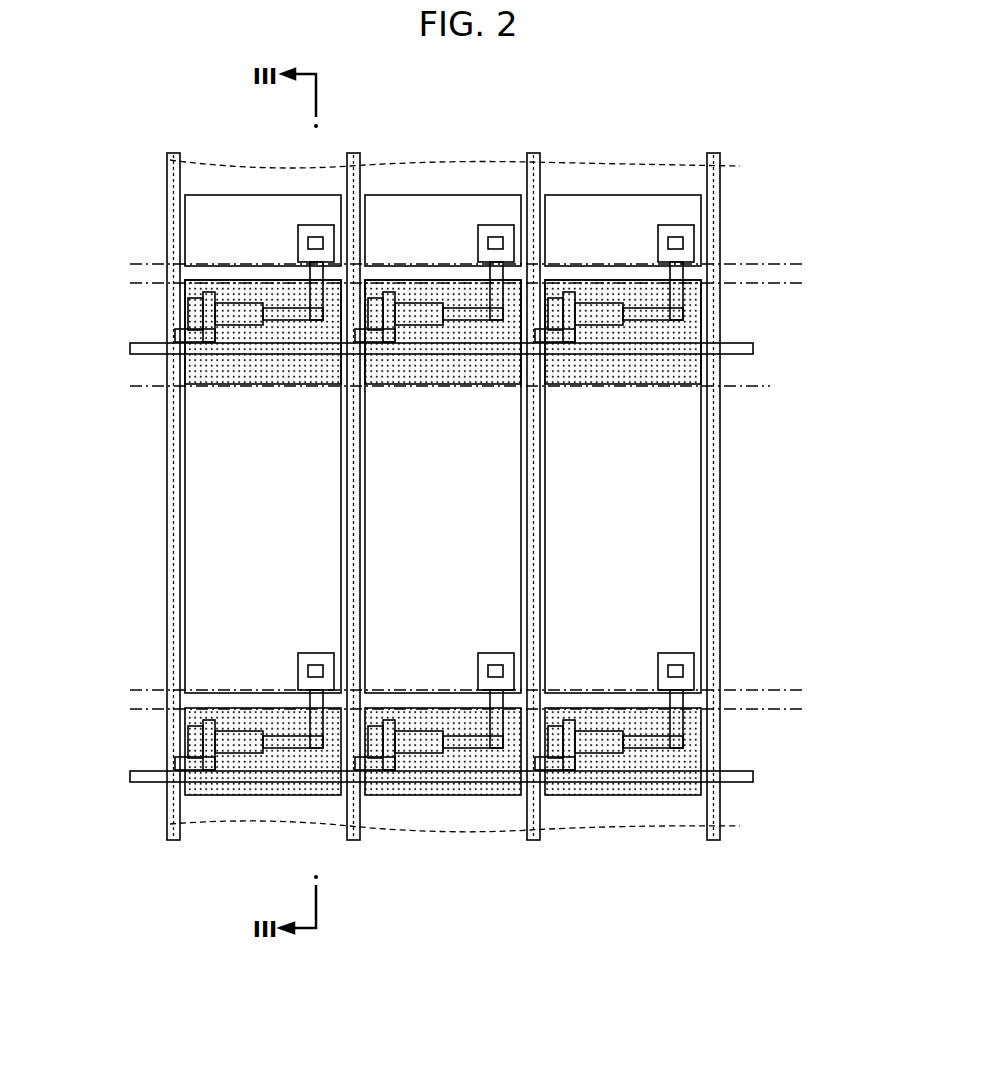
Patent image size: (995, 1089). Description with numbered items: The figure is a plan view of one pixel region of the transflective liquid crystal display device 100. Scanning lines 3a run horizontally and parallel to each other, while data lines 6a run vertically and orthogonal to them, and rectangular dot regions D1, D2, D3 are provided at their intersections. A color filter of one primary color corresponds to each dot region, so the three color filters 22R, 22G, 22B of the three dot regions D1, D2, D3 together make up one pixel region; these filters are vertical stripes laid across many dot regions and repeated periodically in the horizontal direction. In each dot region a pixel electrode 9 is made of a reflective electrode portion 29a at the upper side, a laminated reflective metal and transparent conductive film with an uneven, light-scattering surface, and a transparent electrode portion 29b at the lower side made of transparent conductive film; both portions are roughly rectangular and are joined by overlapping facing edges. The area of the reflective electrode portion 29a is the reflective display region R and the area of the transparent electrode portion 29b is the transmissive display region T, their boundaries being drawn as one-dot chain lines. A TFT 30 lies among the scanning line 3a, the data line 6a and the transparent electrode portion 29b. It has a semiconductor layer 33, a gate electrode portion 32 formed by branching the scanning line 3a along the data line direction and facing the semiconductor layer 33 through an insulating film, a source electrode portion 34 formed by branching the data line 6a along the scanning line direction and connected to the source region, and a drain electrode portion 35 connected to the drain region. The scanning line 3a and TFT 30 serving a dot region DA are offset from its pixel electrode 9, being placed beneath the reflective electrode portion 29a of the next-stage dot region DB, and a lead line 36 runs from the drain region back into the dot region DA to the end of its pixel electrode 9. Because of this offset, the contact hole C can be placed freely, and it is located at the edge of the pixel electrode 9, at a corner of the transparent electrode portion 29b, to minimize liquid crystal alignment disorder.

The liquid crystal display device 100 is at (790, 157).
The pixel electrode 9 is at (383, 448).
The reflective electrode portion 29a is at (213, 377).
The transparent electrode portion 29b is at (230, 465).
The TFT 30 is at (375, 548).
The scanning line 3a is at (130, 348).
The data line 6a is at (177, 840).
The gate electrode portion 32 is at (202, 768).
The semiconductor layer 33 is at (207, 718).
The source electrode portion 34 is at (180, 740).
The drain electrode portion 35 is at (237, 740).
The lead line 36 is at (313, 700).
The contact hole C is at (317, 665).
The dot region D1 is at (245, 255).
The dot region D2 is at (428, 255).
The dot region D3 is at (612, 255).
The color filter 22R is at (258, 810).
The color filter 22G is at (435, 818).
The color filter 22B is at (618, 818).
The transmissive display region T is at (741, 155).
The reflective display region R is at (741, 379).
The dot region DA is at (792, 683).
The dot region DB is at (792, 716).